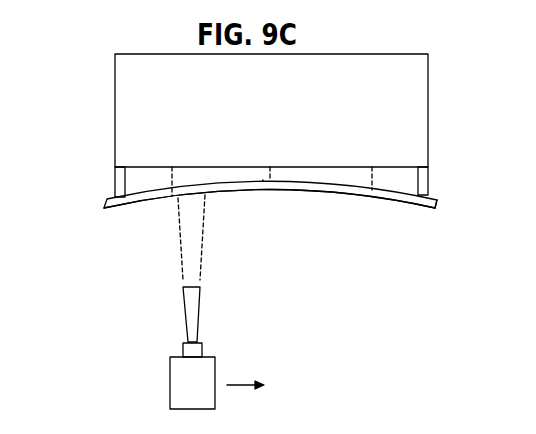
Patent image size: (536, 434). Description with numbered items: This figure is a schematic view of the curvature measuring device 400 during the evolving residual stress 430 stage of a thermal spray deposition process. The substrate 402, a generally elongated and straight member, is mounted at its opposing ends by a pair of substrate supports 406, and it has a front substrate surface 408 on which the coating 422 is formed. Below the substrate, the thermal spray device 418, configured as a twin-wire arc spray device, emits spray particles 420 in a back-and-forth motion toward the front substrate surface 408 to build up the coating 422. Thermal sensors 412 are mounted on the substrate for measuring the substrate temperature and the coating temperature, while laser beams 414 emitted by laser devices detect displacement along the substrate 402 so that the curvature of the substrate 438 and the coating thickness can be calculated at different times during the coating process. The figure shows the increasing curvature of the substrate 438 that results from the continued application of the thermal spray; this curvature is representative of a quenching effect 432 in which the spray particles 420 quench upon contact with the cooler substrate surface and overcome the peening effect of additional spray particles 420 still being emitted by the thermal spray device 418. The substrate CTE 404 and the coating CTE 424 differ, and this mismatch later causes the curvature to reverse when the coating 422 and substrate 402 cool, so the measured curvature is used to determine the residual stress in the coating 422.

The curvature measuring device 400 is at (115, 82).
The substrate 402 is at (118, 212).
The substrate CTE 404 is at (110, 203).
The substrate supports 406 is at (115, 177).
The front substrate surface 408 is at (427, 207).
The thermal sensors 412 is at (385, 190).
The laser beams 414 is at (263, 180).
The thermal spray device 418 is at (170, 380).
The spray particles 420 is at (200, 240).
The coating 422 is at (383, 197).
The coating CTE 424 is at (337, 192).
The evolving residual stress 430 is at (289, 270).
The quenching effect 432 is at (288, 188).
The curvature of the substrate 438 is at (413, 205).